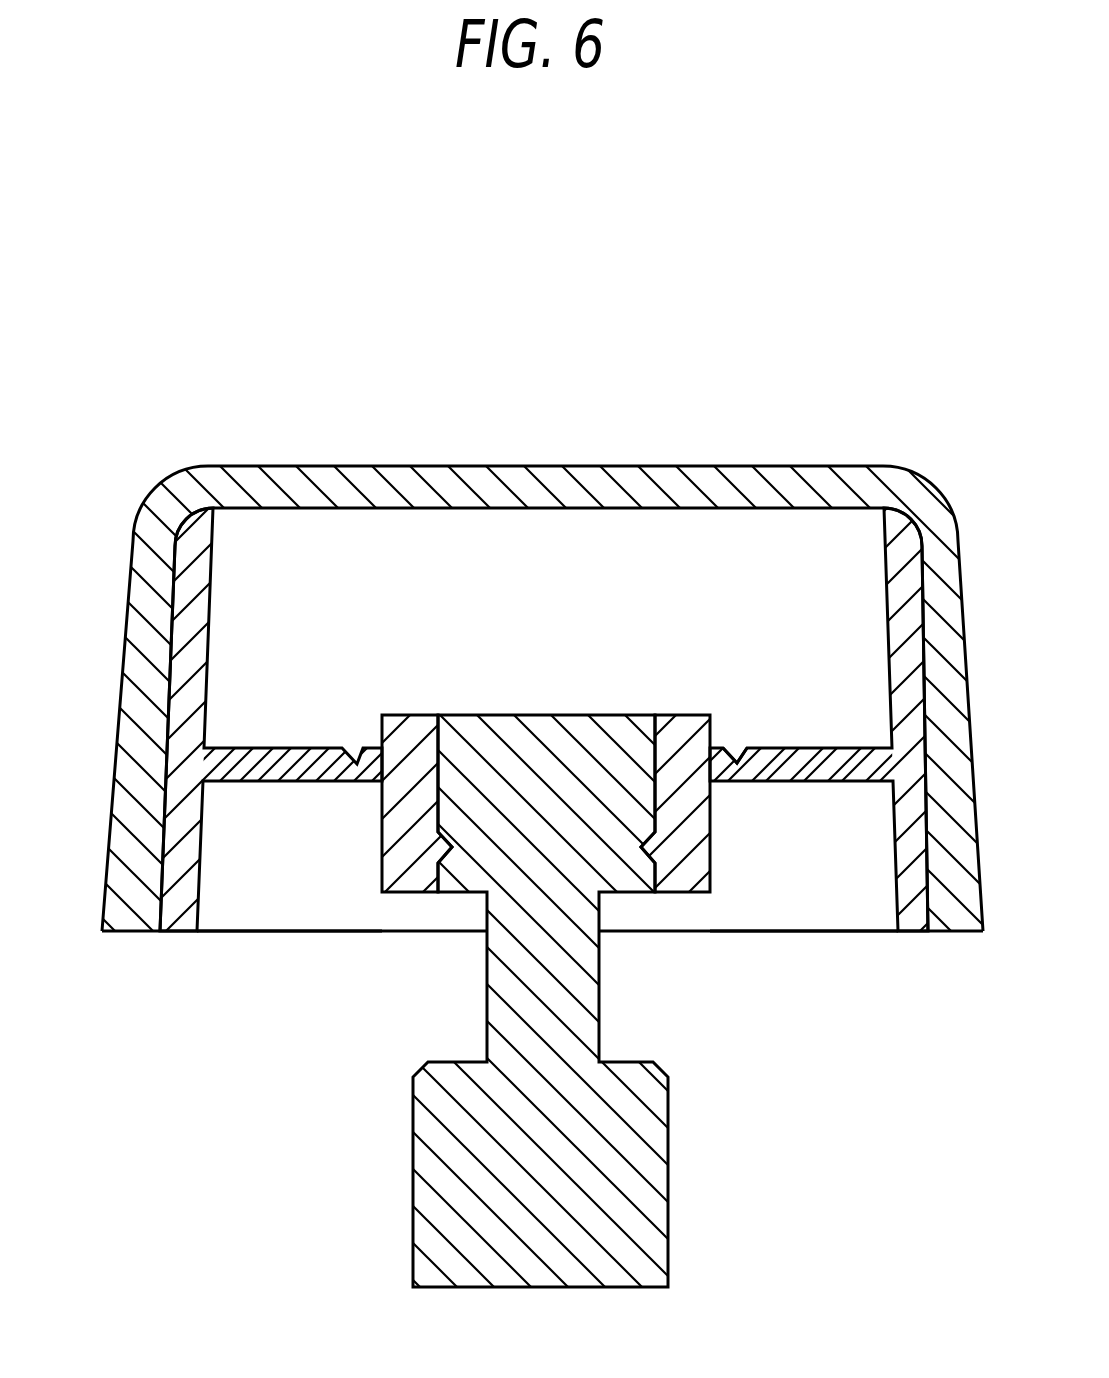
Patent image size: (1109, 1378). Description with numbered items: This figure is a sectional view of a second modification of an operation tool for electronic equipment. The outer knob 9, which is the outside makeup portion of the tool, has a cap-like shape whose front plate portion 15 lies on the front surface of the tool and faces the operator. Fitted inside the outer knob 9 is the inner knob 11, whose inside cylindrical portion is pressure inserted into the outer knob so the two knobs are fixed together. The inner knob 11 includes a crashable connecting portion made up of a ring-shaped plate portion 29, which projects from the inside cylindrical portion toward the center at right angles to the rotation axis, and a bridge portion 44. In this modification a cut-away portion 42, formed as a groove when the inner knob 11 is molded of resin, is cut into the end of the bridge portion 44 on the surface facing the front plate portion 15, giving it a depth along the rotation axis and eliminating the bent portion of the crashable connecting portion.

The outer knob 9 is at (523, 740).
The front plate portion 15 is at (445, 465).
The cut-away portion 42 is at (740, 760).
The inner knob 11 is at (309, 871).
The bridge portion 44 is at (737, 818).
The ring-shaped plate portion 29 is at (812, 818).